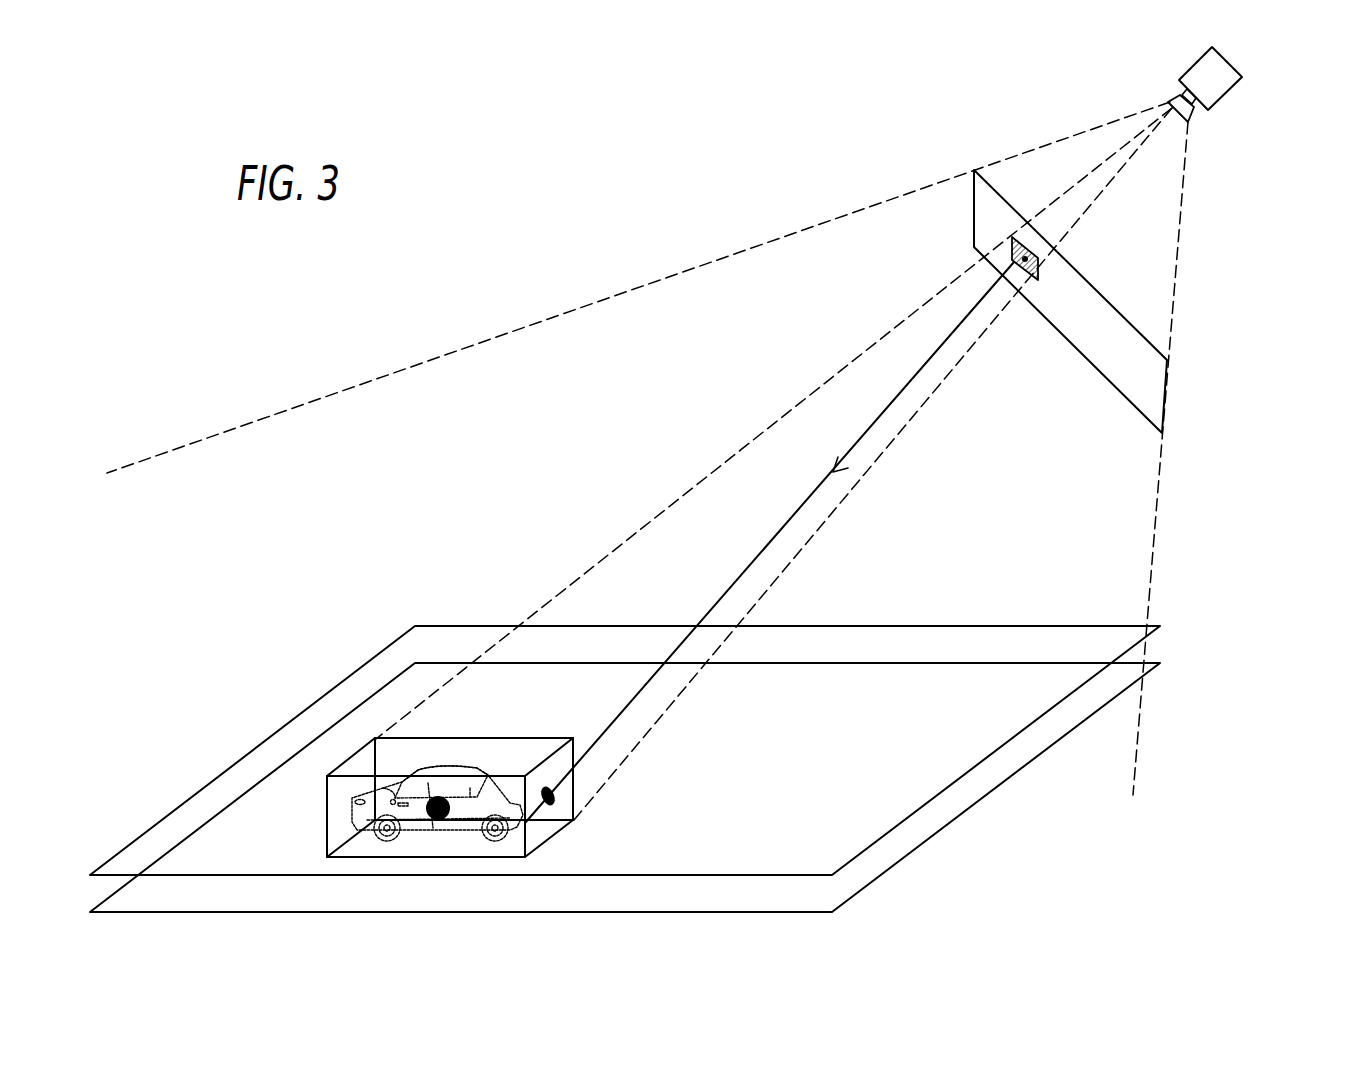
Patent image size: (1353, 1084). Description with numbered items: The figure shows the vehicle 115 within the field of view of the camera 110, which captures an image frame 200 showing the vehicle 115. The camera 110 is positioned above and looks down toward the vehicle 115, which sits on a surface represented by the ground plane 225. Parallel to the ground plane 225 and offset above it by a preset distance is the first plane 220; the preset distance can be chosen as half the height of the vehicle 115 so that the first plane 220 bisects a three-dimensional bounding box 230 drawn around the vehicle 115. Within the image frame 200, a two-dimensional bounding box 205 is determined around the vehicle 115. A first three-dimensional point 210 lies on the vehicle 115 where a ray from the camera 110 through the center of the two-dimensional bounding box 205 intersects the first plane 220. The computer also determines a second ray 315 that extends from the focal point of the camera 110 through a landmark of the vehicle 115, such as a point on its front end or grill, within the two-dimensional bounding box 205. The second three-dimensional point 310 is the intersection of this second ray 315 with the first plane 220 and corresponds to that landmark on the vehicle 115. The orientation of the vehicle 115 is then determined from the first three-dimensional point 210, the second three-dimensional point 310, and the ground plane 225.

The camera 110 is at (1237, 88).
The image frame 200 is at (1137, 323).
The two-dimensional bounding box 205 is at (1035, 250).
The first three-dimensional point 210 is at (445, 818).
The first plane 220 is at (1120, 627).
The ground plane 225 is at (1125, 695).
The three-dimensional bounding box 230 is at (470, 742).
The vehicle 115 is at (400, 778).
The second three-dimensional point 310 is at (552, 800).
The second ray 315 is at (890, 412).